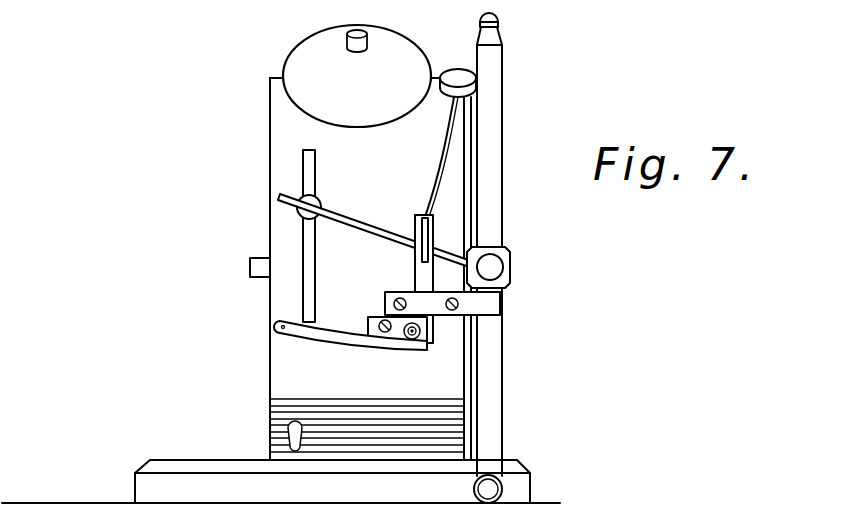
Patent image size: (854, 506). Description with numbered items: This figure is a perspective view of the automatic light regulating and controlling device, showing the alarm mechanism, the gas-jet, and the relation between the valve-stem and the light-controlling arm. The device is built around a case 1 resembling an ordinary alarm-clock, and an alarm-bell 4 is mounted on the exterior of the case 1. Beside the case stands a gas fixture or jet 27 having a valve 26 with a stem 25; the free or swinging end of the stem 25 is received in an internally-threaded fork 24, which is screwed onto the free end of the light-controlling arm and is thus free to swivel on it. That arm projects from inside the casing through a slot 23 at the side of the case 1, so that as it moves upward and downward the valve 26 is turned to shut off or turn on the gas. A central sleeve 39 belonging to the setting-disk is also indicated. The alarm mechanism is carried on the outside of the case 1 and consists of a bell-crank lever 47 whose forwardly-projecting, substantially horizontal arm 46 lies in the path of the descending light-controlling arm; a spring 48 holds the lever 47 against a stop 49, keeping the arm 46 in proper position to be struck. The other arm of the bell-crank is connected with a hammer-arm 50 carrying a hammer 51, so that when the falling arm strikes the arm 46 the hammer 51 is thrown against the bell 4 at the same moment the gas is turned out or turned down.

The case 1 is at (281, 132).
The alarm-bell 4 is at (312, 46).
The slot 23 is at (302, 297).
The fork 24 is at (314, 200).
The stem 25 is at (383, 228).
The valve 26 is at (510, 278).
The gas fixture 27 is at (497, 137).
The central sleeve 39 is at (261, 259).
The arm 46 is at (283, 331).
The bell-crank lever 47 is at (426, 328).
The spring 48 is at (414, 338).
The stop 49 is at (387, 332).
The hammer-arm 50 is at (433, 228).
The hammer 51 is at (478, 85).